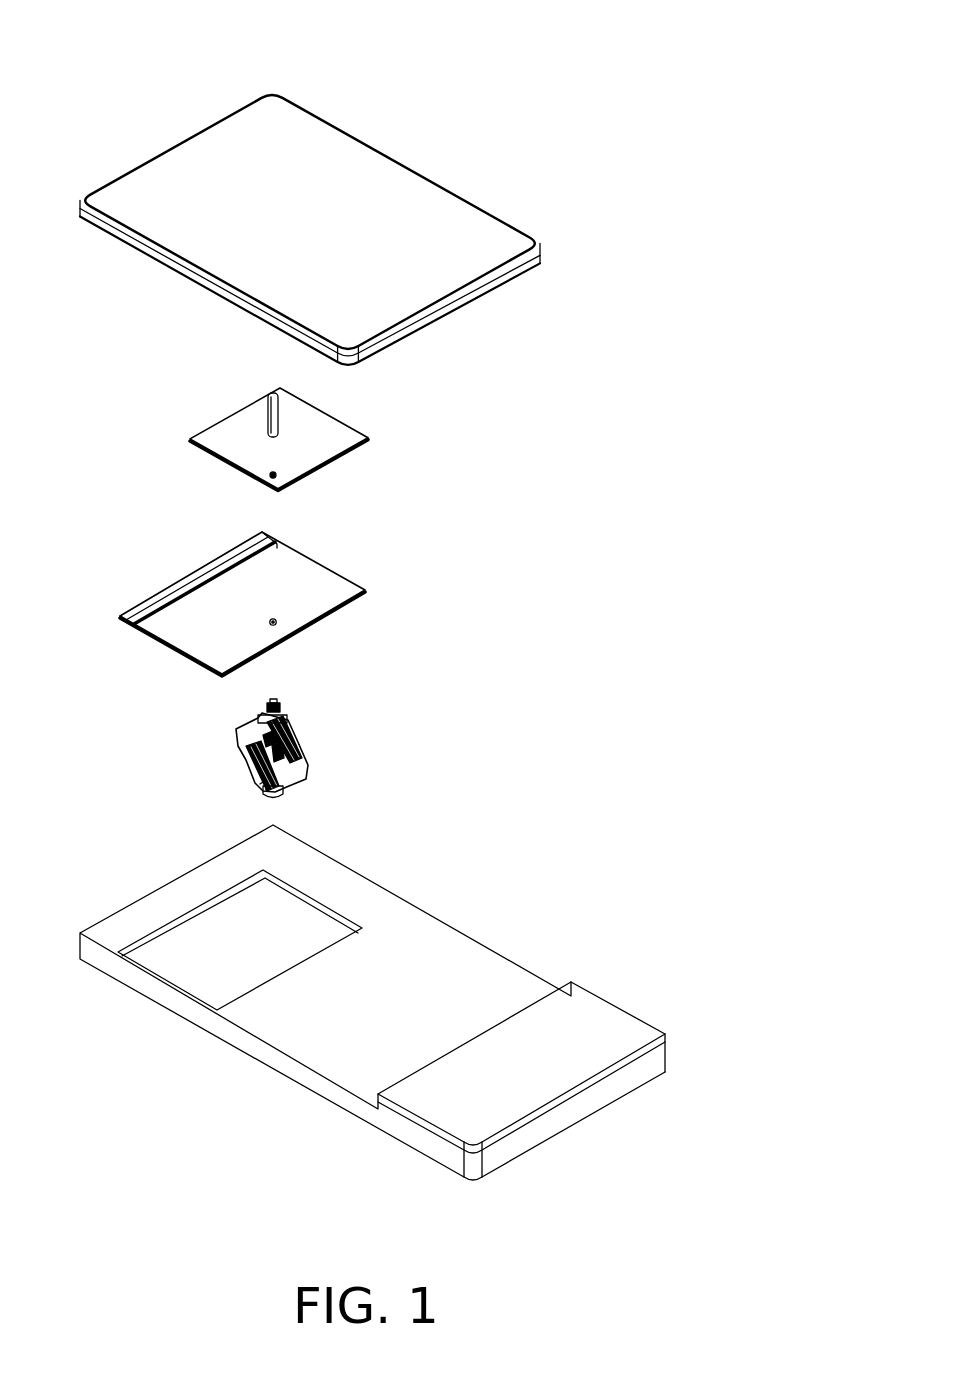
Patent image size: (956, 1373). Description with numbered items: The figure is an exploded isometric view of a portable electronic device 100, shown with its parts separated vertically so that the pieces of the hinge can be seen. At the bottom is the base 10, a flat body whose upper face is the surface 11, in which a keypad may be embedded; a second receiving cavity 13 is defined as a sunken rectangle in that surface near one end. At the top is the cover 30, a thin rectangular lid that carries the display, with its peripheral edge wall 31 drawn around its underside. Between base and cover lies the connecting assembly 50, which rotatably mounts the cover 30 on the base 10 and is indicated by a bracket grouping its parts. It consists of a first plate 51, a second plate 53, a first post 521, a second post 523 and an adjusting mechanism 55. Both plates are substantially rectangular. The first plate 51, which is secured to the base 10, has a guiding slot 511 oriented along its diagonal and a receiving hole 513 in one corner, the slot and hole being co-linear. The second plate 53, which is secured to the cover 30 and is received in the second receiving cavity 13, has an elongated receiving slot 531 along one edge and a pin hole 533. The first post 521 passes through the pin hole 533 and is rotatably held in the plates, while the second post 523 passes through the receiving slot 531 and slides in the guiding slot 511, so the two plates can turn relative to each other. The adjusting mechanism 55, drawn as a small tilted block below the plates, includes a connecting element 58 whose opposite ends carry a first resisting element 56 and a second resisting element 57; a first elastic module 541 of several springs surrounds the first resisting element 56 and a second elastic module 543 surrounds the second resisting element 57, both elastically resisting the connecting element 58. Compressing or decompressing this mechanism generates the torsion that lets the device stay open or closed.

The portable electronic device 100 is at (406, 32).
The base 10 is at (381, 1002).
The surface 11 is at (463, 961).
The second receiving cavity 13 is at (207, 928).
The cover 30 is at (332, 230).
The side wall of cover 31 is at (473, 307).
The connecting assembly 50 is at (460, 476).
The first plate 51 is at (284, 424).
The guiding slot 511 is at (272, 412).
The receiving hole 513 is at (268, 475).
The second plate 53 is at (265, 592).
The receiving slot 531 is at (243, 553).
The pin hole 533 is at (270, 619).
The adjusting mechanism 55 is at (308, 735).
The first resisting element 56 is at (283, 792).
The second resisting element 57 is at (285, 718).
The connecting element 58 is at (297, 773).
The first post 521 is at (263, 790).
The second post 523 is at (263, 717).
The first elastic module 541 is at (250, 760).
The second elastic module 543 is at (295, 752).